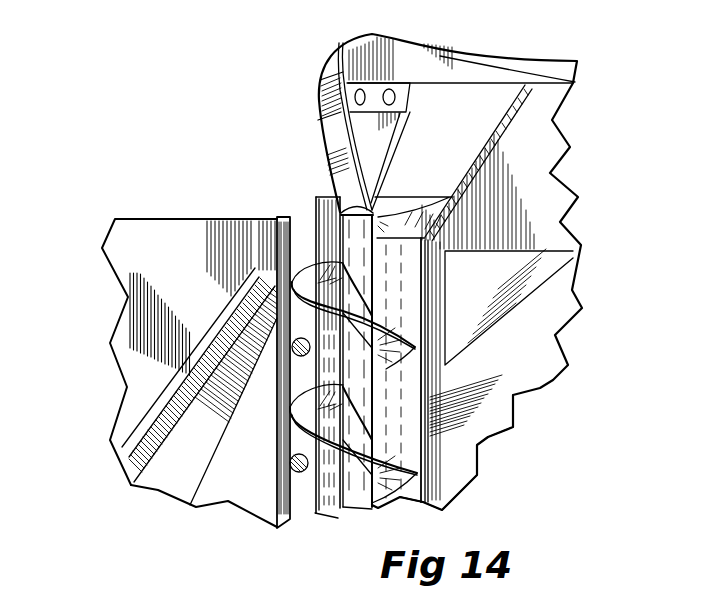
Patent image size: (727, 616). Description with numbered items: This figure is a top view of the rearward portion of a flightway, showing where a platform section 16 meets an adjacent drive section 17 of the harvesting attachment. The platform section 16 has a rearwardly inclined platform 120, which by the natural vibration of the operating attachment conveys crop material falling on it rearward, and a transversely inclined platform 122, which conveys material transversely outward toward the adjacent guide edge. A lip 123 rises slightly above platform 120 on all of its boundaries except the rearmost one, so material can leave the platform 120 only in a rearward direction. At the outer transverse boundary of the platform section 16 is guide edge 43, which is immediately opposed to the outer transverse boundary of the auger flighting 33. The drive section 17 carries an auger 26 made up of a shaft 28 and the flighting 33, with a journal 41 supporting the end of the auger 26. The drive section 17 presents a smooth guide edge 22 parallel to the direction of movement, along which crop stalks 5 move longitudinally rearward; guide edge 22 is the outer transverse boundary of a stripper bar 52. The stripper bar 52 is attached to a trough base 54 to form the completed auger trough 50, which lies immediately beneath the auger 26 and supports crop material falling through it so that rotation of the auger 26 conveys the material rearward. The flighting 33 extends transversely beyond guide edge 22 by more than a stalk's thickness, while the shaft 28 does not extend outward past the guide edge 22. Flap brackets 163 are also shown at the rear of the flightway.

The platform section 16 is at (133, 208).
The drive section 17 is at (601, 121).
The rearwardly inclined platform 120 is at (132, 260).
The transversely inclined platform 122 is at (231, 480).
The lip 123 is at (130, 453).
The guide edge 43 is at (293, 514).
The guide edge 22 is at (308, 510).
The stripper bar 52 is at (331, 486).
The crop stalks 5 is at (291, 458).
The flap bracket 163 is at (445, 270).
The auger trough 50 is at (445, 438).
The trough base 54 is at (406, 408).
The auger 26 is at (457, 466).
The journal 41 is at (340, 211).
The shaft 28 is at (372, 498).
The flighting 33 is at (407, 357).